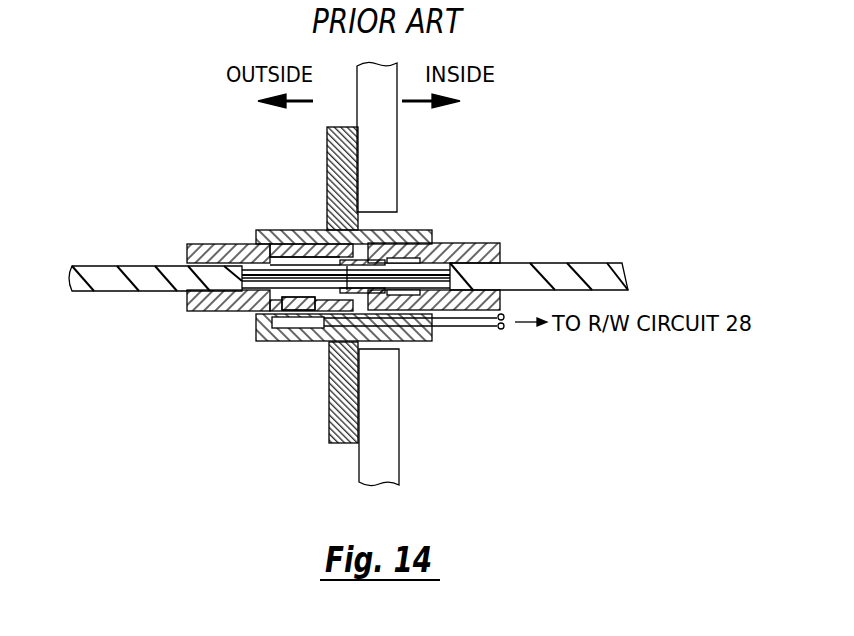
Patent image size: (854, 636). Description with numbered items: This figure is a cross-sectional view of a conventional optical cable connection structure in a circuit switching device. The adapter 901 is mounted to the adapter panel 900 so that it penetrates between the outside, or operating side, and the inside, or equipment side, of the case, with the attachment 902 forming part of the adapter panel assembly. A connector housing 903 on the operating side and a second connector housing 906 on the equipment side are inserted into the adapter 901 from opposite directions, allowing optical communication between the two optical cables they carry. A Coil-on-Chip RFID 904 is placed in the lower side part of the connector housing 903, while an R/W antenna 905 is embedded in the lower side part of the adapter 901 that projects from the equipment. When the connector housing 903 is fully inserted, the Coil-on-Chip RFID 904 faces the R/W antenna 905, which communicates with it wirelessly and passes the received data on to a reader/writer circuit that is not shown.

The adapter panel 900 is at (330, 428).
The adapter 901 is at (257, 235).
The attachment 902 is at (327, 145).
The connector housing 903 is at (189, 299).
The Coil-on-Chip RFID 904 is at (258, 322).
The R/W antenna 905 is at (300, 331).
The connector housing 906 is at (503, 248).